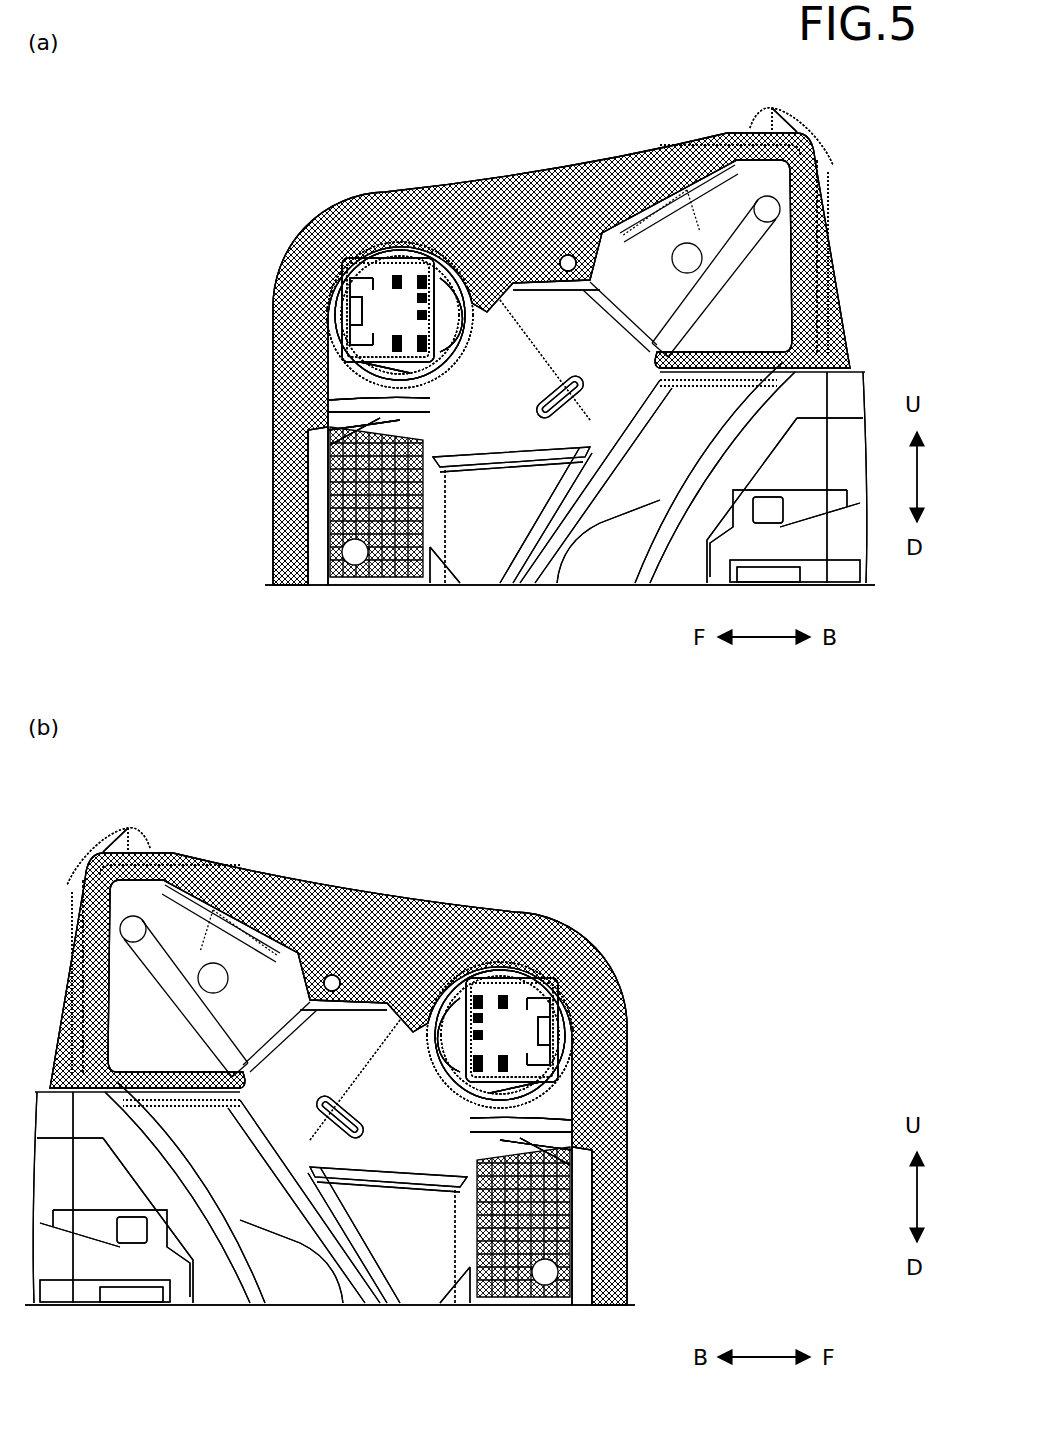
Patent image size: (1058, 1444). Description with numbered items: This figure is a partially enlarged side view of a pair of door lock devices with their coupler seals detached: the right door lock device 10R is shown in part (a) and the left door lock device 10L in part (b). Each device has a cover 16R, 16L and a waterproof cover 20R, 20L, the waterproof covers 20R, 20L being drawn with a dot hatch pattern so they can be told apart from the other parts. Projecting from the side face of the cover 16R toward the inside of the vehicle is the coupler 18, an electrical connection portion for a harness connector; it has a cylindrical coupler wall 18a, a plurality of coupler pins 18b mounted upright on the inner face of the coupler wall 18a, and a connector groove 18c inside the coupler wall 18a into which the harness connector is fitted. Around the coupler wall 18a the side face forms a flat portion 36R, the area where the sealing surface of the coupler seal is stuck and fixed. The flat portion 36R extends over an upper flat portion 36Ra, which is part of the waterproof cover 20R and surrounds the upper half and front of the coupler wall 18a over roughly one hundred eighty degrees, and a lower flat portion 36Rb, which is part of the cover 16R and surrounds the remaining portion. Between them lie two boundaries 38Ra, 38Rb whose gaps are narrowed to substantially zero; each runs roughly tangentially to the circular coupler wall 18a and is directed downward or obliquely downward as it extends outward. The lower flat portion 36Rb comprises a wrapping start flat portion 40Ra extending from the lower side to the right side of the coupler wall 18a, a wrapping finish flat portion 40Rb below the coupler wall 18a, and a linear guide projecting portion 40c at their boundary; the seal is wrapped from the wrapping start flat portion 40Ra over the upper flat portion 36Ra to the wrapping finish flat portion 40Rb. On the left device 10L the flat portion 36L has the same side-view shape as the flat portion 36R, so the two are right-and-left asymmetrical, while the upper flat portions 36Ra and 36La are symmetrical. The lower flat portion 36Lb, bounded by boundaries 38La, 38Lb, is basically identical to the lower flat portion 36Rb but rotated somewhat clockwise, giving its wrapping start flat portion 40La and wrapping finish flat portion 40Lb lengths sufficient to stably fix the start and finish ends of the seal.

The right door lock device 10R is at (720, 106).
The left door lock device 10L is at (610, 826).
The cover 16R is at (460, 523).
The cover 16L is at (440, 1243).
The coupler 18 is at (358, 220).
The coupler wall 18a is at (393, 242).
The coupler pins 18b is at (443, 278).
The connector groove 18c is at (368, 270).
The waterproof cover 20R is at (580, 185).
The waterproof cover 20L is at (318, 905).
The flat portion 36R is at (100, 313).
The upper flat portion 36Ra is at (300, 303).
The lower flat portion 36Rb is at (178, 382).
The flat portion 36L is at (800, 1033).
The upper flat portion 36La is at (600, 1023).
The lower flat portion 36Lb is at (718, 1100).
The wrapping finish flat portion 40Rb is at (342, 390).
The wrapping start flat portion 40Ra is at (410, 455).
The wrapping start flat portion 40La is at (558, 1110).
The wrapping finish flat portion 40Lb is at (490, 1175).
The guide projecting portion 40c is at (420, 440).
The boundary 38Ra is at (360, 362).
The boundary 38Rb is at (490, 308).
The boundary 38La is at (540, 1082).
The boundary 38Lb is at (410, 1028).